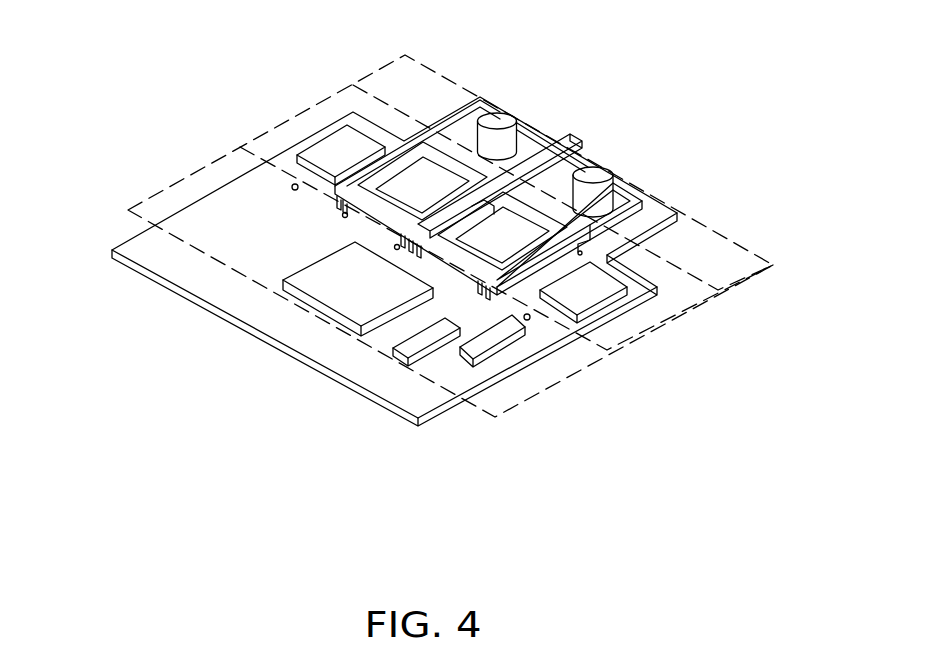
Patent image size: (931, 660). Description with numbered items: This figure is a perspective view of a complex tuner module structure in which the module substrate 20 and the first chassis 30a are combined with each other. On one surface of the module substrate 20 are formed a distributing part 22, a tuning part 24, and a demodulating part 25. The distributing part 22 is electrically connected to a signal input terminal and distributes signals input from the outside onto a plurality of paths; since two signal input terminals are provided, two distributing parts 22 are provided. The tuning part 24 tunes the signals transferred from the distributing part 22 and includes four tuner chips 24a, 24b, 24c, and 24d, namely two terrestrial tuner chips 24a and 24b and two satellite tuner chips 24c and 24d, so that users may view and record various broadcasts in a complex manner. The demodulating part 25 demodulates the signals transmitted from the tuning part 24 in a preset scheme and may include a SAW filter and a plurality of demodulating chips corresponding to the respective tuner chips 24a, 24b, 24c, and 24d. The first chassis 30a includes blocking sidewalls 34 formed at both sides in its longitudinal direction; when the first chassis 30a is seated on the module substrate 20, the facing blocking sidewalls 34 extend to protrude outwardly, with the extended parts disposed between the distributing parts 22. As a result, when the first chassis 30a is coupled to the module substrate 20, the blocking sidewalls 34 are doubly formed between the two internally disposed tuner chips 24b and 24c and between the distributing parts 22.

The module substrate 20 is at (676, 200).
The distributing part 22 is at (382, 71).
The tuning part 24 is at (286, 118).
The tuner chip 24a is at (327, 157).
The tuner chip 24b is at (407, 200).
The tuner chip 24c is at (490, 245).
The tuner chip 24d is at (585, 293).
The demodulating part 25 is at (183, 178).
The first chassis 30a is at (576, 130).
The blocking sidewall 34 is at (481, 212).